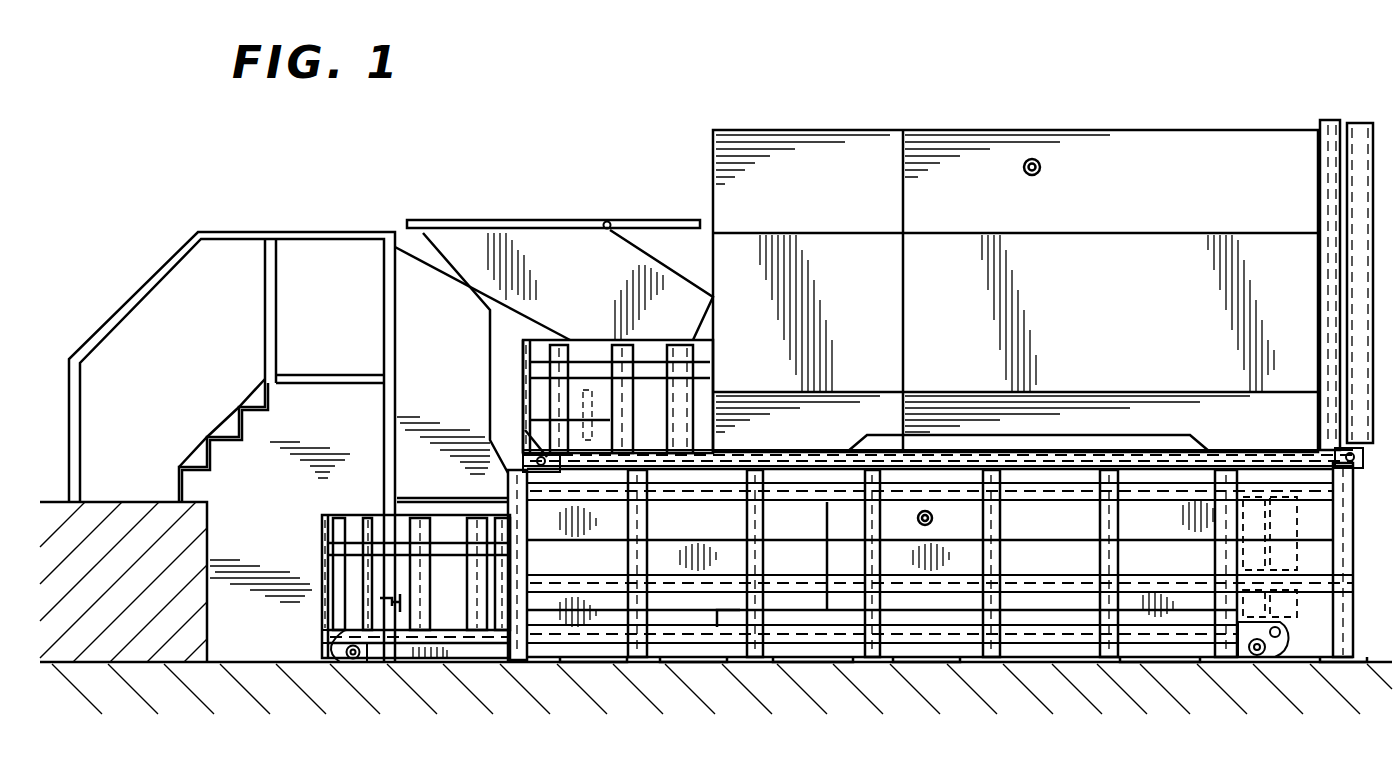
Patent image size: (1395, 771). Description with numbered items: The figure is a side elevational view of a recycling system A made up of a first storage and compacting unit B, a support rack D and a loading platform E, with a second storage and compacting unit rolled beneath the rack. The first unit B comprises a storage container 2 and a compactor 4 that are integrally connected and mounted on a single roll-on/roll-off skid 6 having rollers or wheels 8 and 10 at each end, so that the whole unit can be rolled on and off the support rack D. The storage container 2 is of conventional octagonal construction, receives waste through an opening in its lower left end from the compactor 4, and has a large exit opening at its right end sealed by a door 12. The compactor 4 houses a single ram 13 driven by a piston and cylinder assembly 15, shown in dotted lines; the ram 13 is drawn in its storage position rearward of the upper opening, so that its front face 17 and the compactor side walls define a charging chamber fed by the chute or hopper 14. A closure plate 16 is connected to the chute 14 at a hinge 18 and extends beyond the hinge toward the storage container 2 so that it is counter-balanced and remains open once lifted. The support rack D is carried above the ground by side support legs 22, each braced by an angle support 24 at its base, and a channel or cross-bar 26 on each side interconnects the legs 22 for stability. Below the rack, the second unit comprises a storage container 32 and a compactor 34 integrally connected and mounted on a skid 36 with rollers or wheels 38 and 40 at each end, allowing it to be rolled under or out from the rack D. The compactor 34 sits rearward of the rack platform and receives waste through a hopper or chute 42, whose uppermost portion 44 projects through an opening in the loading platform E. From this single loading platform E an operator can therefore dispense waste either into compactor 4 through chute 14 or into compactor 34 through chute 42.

The storage container 2 is at (1183, 129).
The compactor 4 is at (655, 413).
The roll-on/roll-off skid 6 is at (1256, 446).
The roller or wheel 8 is at (1338, 450).
The roller or wheel 10 is at (543, 456).
The door 12 is at (1358, 119).
The ram 13 is at (587, 393).
The chute or hopper 14 is at (631, 258).
The piston and cylinder assembly 15 is at (553, 420).
The closure plate 16 is at (508, 219).
The front face 17 is at (600, 418).
The hinge 18 is at (607, 221).
The side support leg 22 is at (992, 548).
The angle support 24 is at (1211, 646).
The channel or cross-bar 26 is at (1308, 578).
The storage container 32 is at (669, 560).
The compactor 34 is at (448, 619).
The roll-on/roll-off skid 36 is at (579, 642).
The roller or wheel 38 is at (357, 662).
The roller or wheel 40 is at (1257, 658).
The hopper or chute 42 is at (416, 476).
The uppermost portion of the chute 44 is at (418, 286).
The recycling system A is at (871, 120).
The first storage and compacting unit B is at (1059, 128).
The support rack D is at (1349, 550).
The loading platform E is at (311, 200).